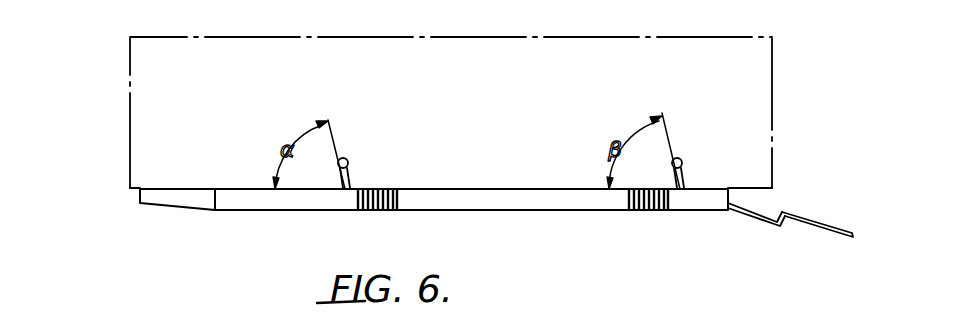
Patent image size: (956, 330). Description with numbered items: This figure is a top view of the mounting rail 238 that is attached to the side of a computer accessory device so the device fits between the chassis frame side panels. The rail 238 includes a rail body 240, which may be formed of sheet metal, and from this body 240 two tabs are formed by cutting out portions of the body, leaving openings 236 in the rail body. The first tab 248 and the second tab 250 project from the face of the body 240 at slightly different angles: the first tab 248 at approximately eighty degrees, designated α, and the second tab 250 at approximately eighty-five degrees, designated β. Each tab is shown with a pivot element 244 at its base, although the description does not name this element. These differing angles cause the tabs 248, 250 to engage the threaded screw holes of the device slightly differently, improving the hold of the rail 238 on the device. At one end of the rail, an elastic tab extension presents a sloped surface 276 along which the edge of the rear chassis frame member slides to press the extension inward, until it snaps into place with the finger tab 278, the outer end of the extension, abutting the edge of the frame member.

The openings 236 is at (130, 87).
The mounting rail 238 is at (170, 216).
The rail body 240 is at (540, 210).
The pivot pins 244 is at (347, 159).
The first tab 248 is at (352, 171).
The second tab 250 is at (683, 172).
The sloped surface 276 is at (754, 221).
The finger tab 278 is at (845, 237).